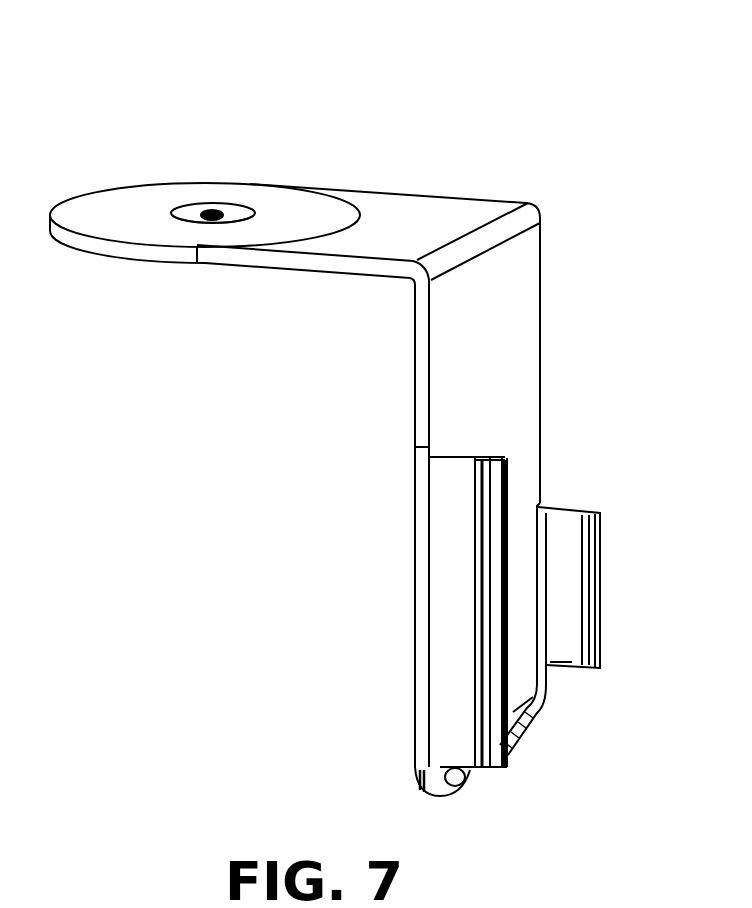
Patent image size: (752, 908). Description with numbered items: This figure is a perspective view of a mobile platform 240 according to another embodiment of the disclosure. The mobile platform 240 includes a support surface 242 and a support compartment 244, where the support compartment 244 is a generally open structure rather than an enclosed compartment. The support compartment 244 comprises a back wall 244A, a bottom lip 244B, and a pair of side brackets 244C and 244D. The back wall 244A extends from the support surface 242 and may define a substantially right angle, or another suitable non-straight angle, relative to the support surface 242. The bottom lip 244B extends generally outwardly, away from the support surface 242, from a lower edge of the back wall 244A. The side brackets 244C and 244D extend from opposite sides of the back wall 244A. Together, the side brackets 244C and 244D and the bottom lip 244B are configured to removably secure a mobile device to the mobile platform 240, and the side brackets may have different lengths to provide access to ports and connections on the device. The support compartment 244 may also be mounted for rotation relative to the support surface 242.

The mobile platform 240 is at (369, 415).
The support surface 242 is at (142, 212).
The support compartment 244 is at (515, 566).
The back wall 244A is at (498, 388).
The bottom lip 244B is at (518, 722).
The side bracket 244C is at (445, 628).
The side bracket 244D is at (600, 573).